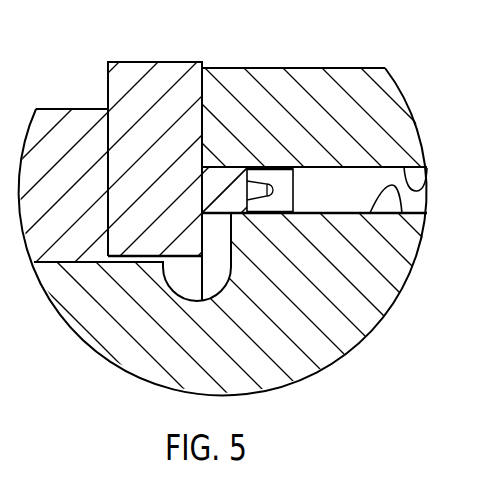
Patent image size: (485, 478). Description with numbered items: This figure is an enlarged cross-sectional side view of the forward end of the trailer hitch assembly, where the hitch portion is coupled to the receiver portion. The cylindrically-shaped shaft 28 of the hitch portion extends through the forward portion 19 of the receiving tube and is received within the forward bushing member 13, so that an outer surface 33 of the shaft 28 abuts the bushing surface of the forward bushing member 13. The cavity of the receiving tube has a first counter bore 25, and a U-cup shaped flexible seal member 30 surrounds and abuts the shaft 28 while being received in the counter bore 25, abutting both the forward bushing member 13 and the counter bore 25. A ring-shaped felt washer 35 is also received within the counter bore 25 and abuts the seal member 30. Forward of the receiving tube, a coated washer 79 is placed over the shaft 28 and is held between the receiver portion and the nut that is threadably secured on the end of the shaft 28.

The coated washer 79 is at (140, 62).
The ring-shaped felt washer 35 is at (225, 175).
The forward portion 19 is at (268, 66).
The U-cup shaped flexible seal member 30 is at (278, 170).
The forward bushing member 13 is at (337, 182).
The first counter bore 25 is at (428, 172).
The outer surface 33 is at (402, 214).
The shaft 28 is at (310, 348).